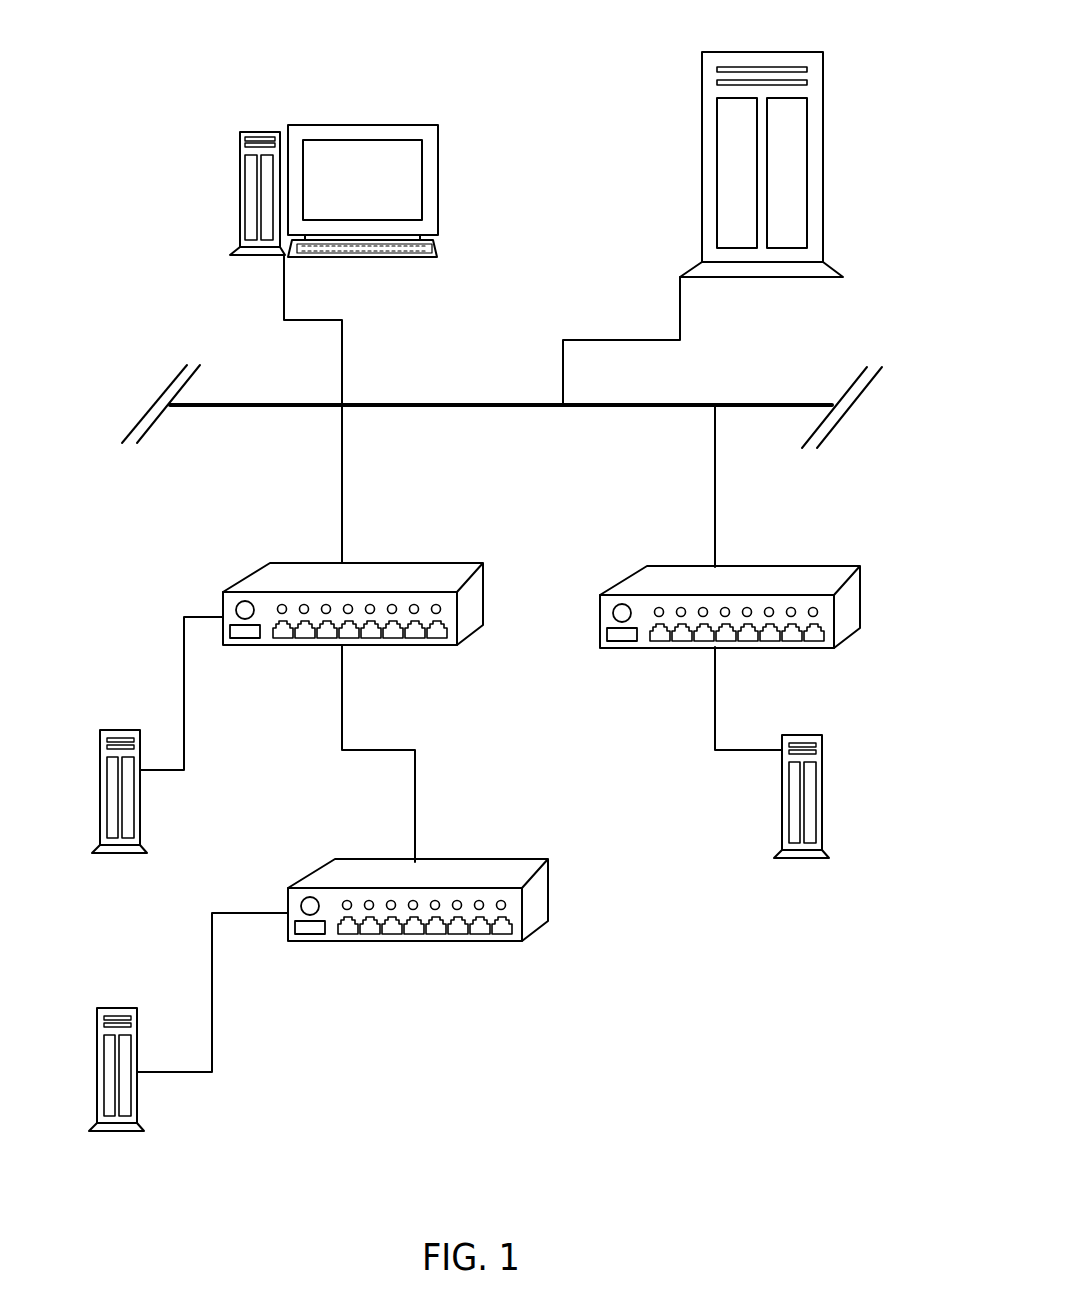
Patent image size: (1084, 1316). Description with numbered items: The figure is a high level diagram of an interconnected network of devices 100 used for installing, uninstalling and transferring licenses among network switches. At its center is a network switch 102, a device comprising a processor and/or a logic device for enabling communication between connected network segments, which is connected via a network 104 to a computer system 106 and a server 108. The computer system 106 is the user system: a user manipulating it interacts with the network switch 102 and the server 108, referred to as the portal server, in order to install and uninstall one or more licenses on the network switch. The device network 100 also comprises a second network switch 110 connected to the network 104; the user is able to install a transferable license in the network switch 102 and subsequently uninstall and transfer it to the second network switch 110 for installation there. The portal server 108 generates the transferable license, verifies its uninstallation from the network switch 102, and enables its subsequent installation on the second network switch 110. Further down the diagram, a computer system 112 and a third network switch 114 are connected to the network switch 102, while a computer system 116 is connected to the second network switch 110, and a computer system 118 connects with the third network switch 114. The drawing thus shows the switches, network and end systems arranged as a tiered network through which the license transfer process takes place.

The interconnected network of devices 100 is at (150, 52).
The network switch 102 is at (317, 563).
The network 104 is at (263, 405).
The computer system 106 is at (241, 167).
The server 108 is at (702, 78).
The second network switch 110 is at (695, 567).
The computer system 112 is at (128, 730).
The third network switch 114 is at (552, 908).
The computer system 116 is at (825, 813).
The computer system 118 is at (132, 1008).